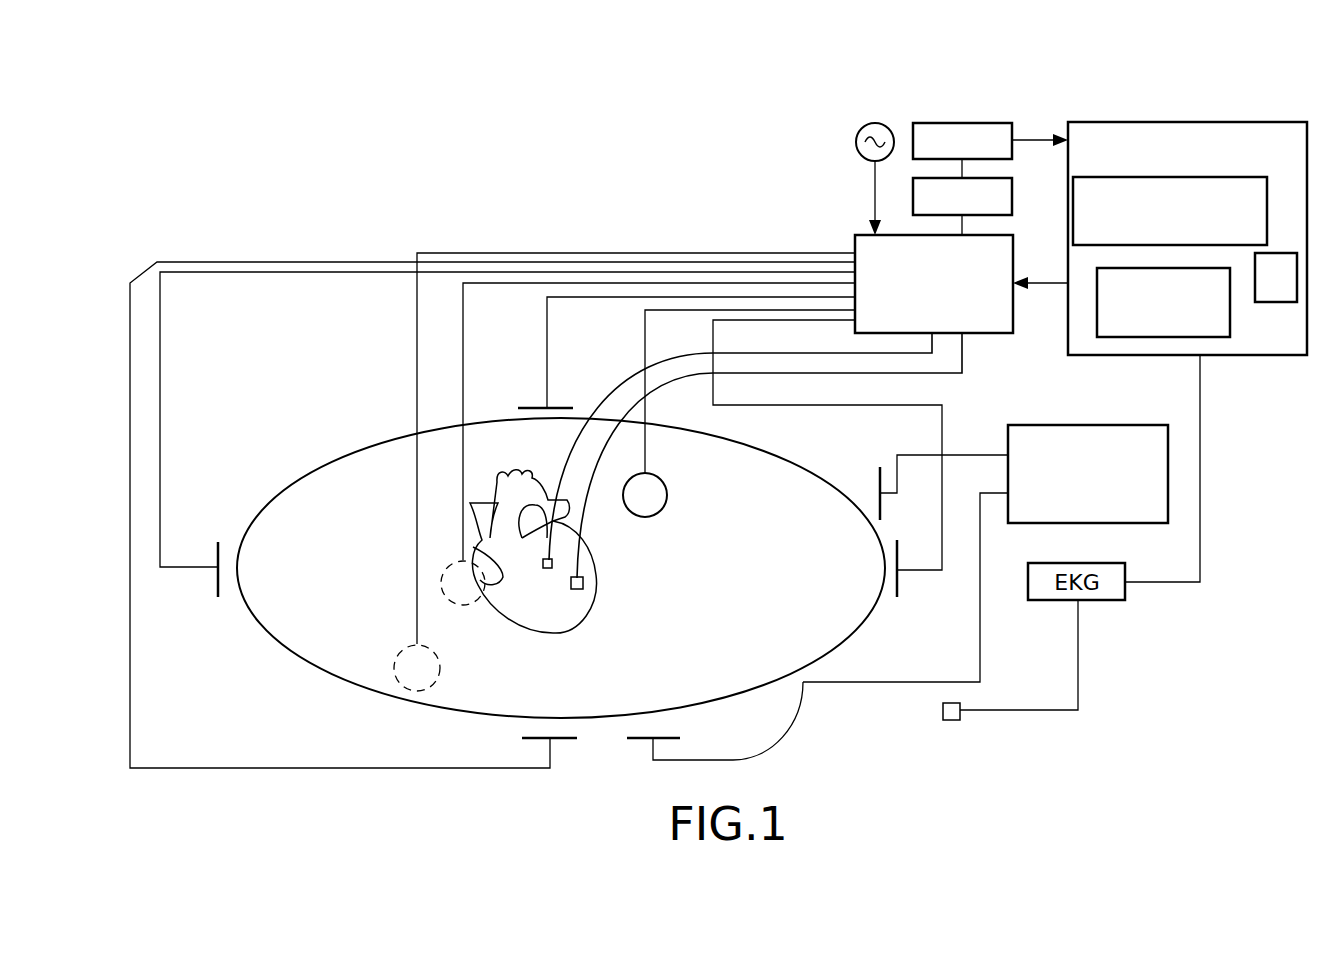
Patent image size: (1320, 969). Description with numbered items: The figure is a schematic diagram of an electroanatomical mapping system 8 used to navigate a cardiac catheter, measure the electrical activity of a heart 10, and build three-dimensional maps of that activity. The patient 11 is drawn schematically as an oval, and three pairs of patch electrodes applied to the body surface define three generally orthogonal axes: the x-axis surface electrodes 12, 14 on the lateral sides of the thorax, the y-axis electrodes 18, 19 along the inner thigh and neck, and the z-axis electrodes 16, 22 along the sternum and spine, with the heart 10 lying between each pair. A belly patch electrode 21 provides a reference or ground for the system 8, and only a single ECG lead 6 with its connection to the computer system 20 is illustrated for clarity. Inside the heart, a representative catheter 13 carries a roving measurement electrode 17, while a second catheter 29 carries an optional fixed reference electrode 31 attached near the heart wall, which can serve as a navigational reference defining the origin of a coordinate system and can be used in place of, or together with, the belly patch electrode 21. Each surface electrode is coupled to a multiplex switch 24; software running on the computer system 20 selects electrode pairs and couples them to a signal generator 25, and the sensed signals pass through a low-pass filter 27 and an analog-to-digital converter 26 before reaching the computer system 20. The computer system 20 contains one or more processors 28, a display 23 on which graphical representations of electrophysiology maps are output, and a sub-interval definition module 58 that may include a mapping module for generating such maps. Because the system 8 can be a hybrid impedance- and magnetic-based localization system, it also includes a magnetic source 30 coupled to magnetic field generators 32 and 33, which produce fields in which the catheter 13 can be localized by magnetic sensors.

The electroanatomical mapping system 8 is at (218, 175).
The signal generator 25 is at (858, 131).
The analog-to-digital converter 26 is at (982, 122).
The low pass filter 27 is at (1013, 197).
The multiplex switch 24 is at (921, 310).
The computer system 20 is at (1263, 340).
The processors 28 is at (1157, 238).
The display 23 is at (1150, 330).
The sub-interval definition module 58 is at (1263, 290).
The magnetic source 30 is at (1070, 425).
The magnetic field generator 32 is at (882, 500).
The y-axis surface electrode 19 is at (900, 580).
The patient 11 is at (800, 467).
The second catheter 29 is at (562, 440).
The catheter 13 is at (965, 358).
The heart 10 is at (584, 580).
The catheter electrode 17 is at (580, 590).
The fixed reference electrode 31 is at (547, 568).
The x-axis surface electrode 12 is at (538, 406).
The z-axis surface electrode 16 is at (648, 448).
The z-axis surface electrode 22 is at (463, 332).
The belly patch electrode 21 is at (415, 582).
The y-axis surface electrode 18 is at (217, 586).
The x-axis surface electrode 14 is at (552, 745).
The magnetic field generator 33 is at (655, 762).
The ECG lead 6 is at (942, 717).